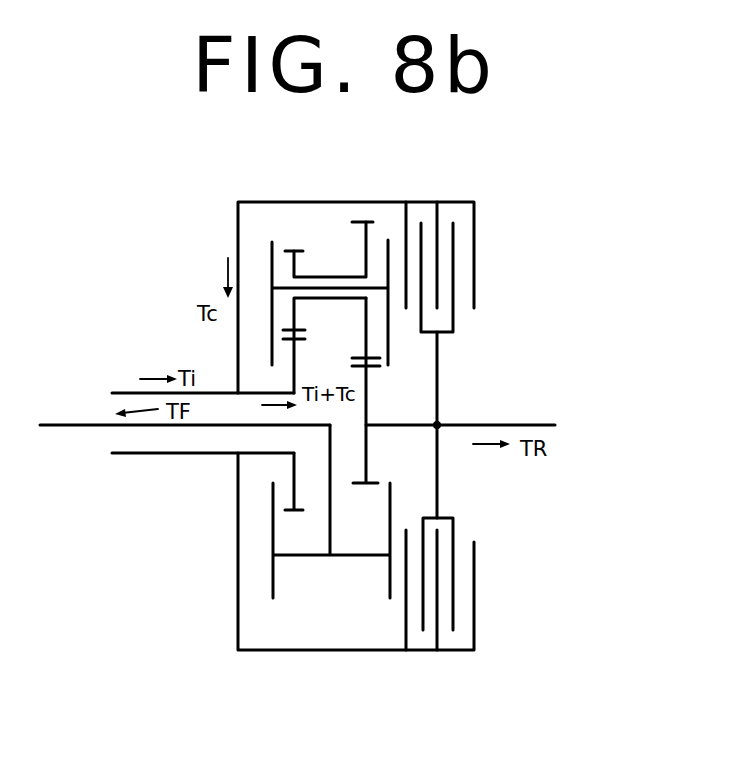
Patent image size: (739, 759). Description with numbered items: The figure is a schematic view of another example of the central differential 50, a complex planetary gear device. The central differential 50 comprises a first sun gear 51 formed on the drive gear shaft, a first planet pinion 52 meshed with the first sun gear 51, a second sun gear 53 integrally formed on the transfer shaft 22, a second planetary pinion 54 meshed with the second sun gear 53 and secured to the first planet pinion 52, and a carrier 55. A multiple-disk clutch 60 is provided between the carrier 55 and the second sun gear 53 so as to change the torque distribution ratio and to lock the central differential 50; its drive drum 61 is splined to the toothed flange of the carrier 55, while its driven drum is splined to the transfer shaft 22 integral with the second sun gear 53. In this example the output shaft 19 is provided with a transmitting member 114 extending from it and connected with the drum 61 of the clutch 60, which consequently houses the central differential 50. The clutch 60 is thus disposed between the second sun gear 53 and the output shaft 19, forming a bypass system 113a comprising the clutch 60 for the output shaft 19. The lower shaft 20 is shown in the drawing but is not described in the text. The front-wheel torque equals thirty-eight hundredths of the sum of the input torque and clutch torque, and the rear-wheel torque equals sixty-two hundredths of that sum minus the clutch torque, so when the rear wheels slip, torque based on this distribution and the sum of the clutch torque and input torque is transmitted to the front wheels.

The output shaft 19 is at (121, 392).
The main shaft 20 is at (78, 427).
The transfer shaft 22 is at (533, 425).
The central differential 50 is at (334, 226).
The first sun gear 51 is at (295, 362).
The first planet pinion 52 is at (300, 250).
The second sun gear 53 is at (368, 408).
The second planetary pinion 54 is at (368, 222).
The carrier 55 is at (303, 557).
The clutch 60 is at (460, 188).
The drive drum 61 is at (420, 202).
The bypass system 113a is at (492, 285).
The transmitting member 114 is at (238, 212).